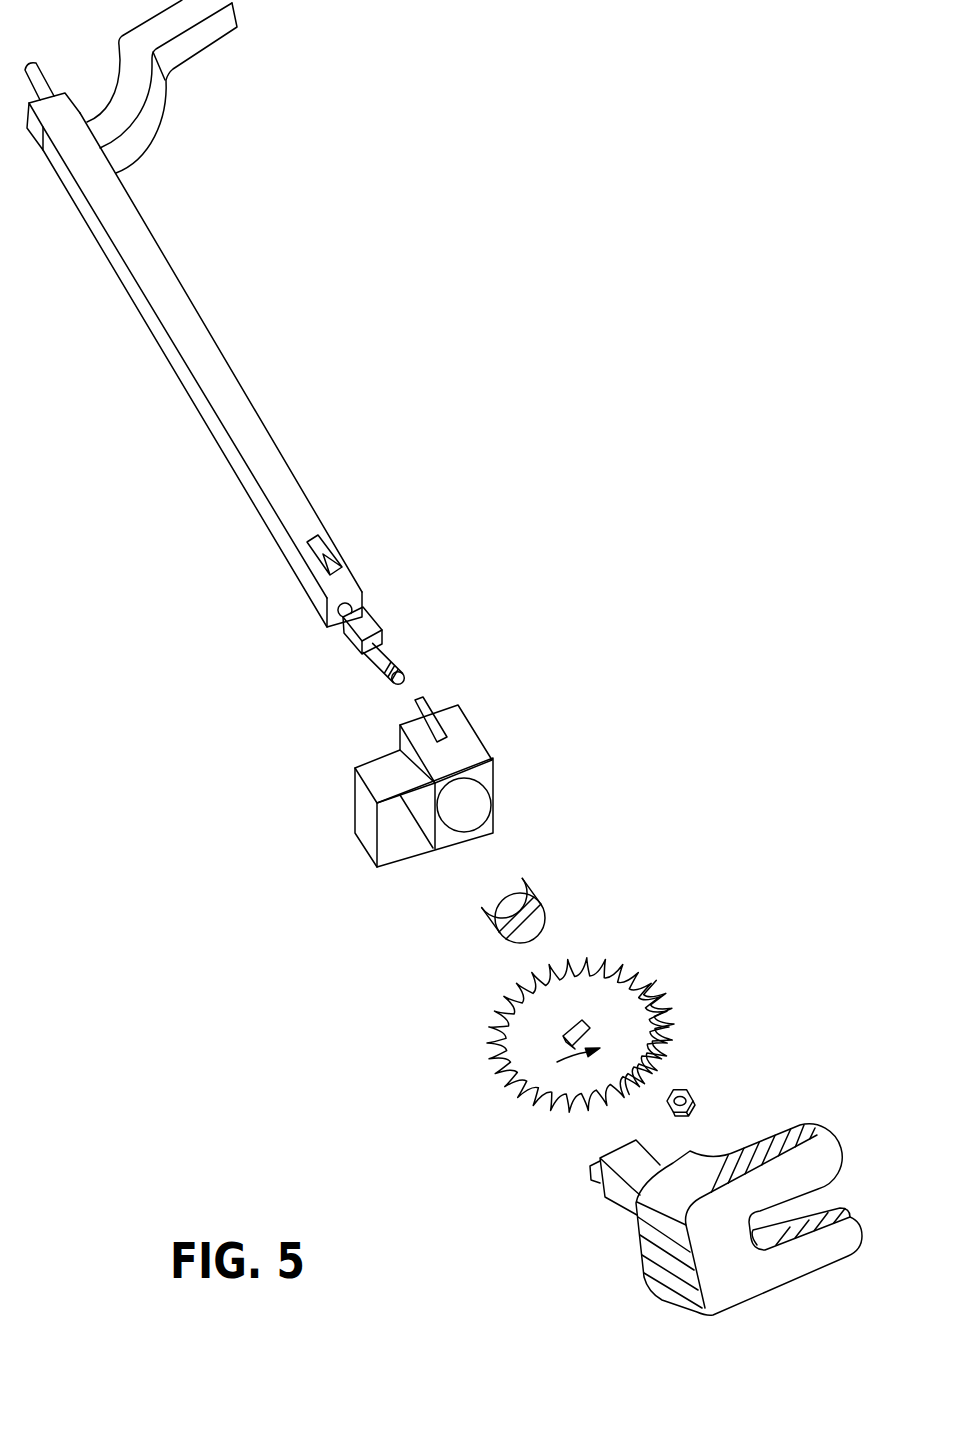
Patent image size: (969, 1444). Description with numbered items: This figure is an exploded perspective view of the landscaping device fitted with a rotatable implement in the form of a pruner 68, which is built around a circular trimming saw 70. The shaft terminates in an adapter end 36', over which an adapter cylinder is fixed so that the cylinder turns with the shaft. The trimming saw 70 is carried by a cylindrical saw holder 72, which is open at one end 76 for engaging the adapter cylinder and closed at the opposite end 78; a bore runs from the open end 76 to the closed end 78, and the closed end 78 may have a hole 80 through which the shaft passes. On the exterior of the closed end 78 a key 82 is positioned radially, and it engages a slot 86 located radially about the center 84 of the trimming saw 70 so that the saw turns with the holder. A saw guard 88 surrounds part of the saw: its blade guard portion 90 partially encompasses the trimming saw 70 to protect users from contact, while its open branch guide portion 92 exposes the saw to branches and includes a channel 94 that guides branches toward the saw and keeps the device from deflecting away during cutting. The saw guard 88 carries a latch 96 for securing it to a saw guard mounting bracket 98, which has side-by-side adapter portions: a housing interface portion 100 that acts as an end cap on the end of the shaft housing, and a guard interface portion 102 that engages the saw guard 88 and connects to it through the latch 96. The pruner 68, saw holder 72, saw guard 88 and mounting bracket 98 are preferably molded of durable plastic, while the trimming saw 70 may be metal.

The adapter end 36' is at (262, 342).
The saw guard mounting bracket 98 is at (505, 768).
The housing interface portion 100 is at (464, 723).
The guard interface portion 102 is at (355, 768).
The cylindrical saw holder 72 is at (527, 863).
The open end 76 is at (477, 903).
The closed end 78 is at (549, 914).
The hole 80 is at (505, 942).
The key 82 is at (538, 892).
The pruner 68 is at (650, 950).
The circular trimming saw 70 is at (620, 1007).
The center 84 is at (562, 1037).
The slot 86 is at (590, 1034).
The saw guard 88 is at (757, 1110).
The blade guard portion 90 is at (645, 1273).
The branch guide portion 92 is at (852, 1220).
The channel 94 is at (823, 1198).
The latch 96 is at (598, 1180).